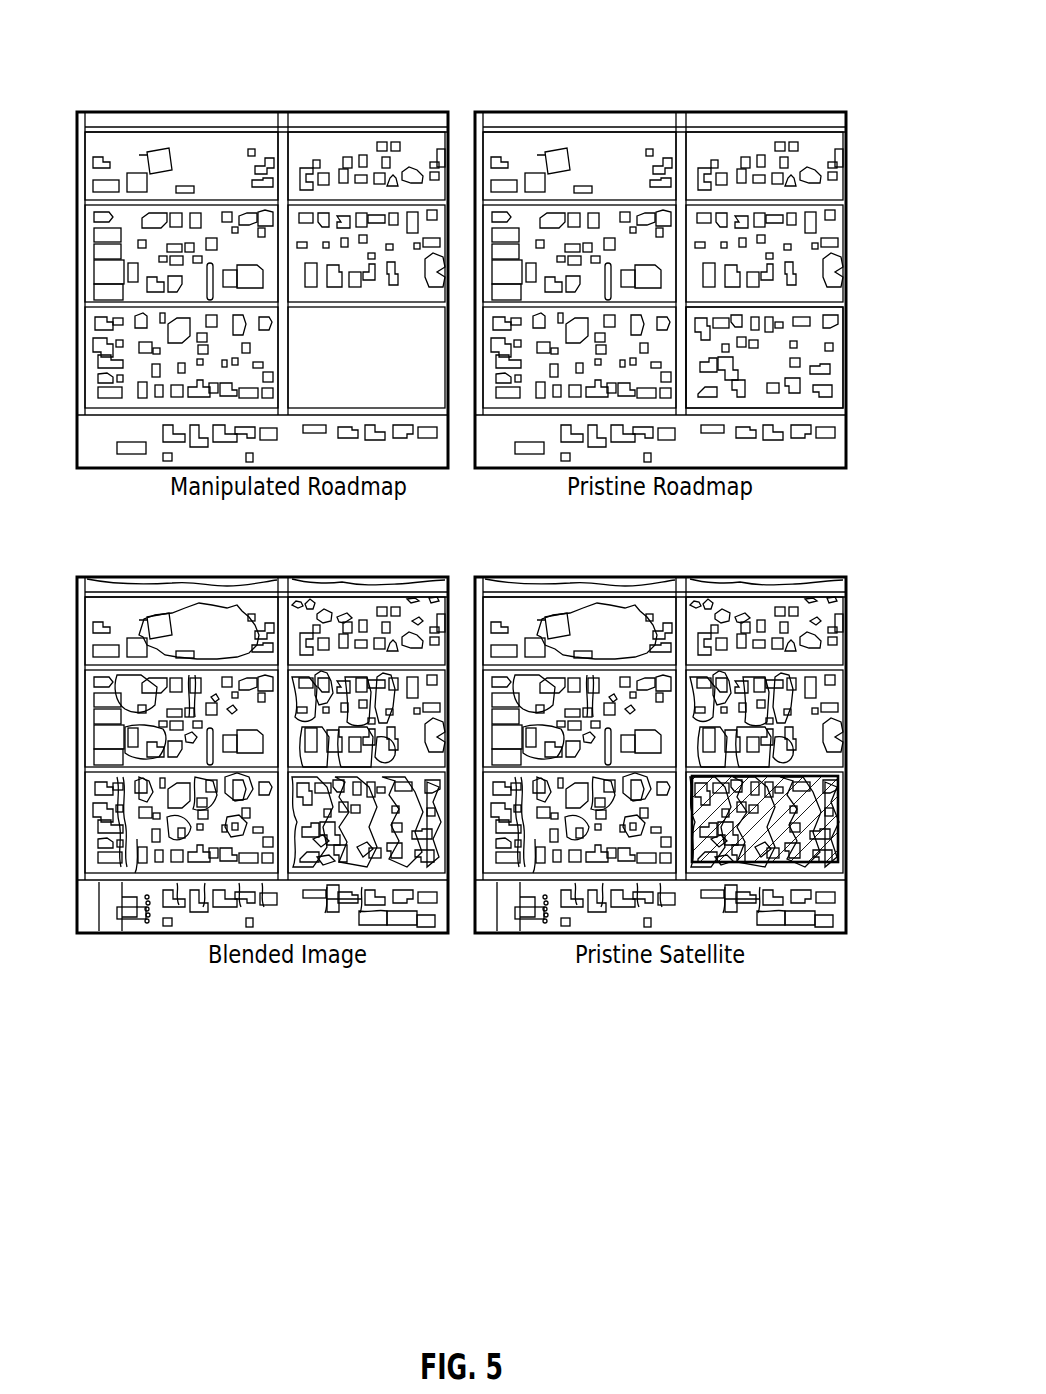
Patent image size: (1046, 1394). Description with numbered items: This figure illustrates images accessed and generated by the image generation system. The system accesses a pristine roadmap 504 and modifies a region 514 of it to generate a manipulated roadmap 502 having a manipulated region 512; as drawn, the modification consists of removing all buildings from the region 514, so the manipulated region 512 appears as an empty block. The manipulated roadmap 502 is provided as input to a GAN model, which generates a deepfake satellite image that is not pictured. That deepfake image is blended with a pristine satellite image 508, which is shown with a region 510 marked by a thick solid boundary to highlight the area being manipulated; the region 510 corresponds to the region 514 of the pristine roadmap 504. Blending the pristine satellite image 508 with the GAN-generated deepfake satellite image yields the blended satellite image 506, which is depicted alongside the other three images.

The manipulated roadmap 502 is at (261, 112).
The pristine roadmap 504 is at (620, 112).
The blended satellite image 506 is at (182, 937).
The pristine satellite image 508 is at (547, 937).
The region 510 is at (838, 777).
The manipulated region 512 is at (423, 407).
The region 514 is at (803, 407).